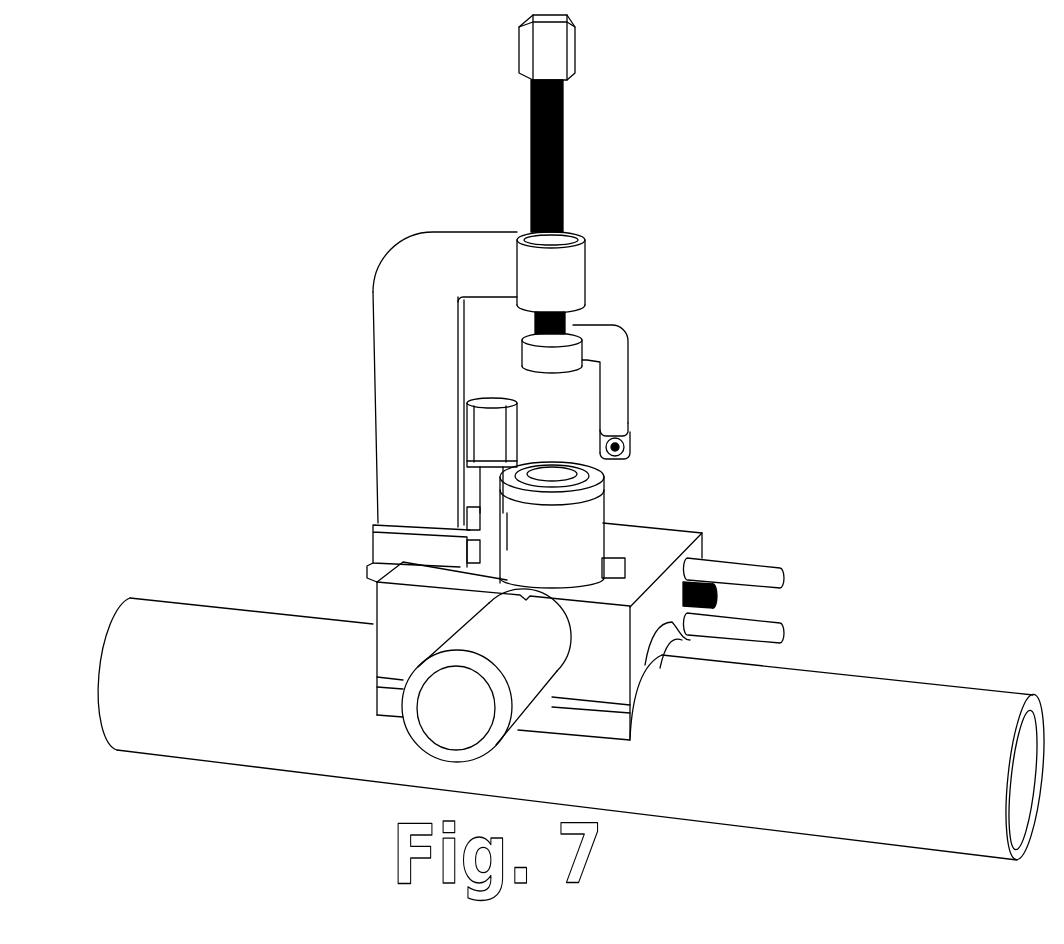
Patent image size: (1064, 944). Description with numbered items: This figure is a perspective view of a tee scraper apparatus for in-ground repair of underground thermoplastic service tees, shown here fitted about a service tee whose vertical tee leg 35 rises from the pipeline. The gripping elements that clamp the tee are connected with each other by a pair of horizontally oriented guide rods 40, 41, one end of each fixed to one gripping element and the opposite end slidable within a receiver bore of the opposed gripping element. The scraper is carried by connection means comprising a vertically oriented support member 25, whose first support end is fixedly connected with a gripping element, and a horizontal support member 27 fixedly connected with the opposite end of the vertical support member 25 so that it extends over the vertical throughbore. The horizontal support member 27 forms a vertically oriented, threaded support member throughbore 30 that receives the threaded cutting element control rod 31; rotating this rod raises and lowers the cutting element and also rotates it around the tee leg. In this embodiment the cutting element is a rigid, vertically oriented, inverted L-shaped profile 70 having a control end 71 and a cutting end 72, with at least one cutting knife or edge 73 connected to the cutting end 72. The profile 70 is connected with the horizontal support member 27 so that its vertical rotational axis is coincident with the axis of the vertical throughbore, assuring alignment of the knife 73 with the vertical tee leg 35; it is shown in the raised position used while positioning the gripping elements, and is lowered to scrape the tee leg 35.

The vertically oriented support member 25 is at (372, 368).
The horizontal support member 27 is at (455, 232).
The support member throughbore 30 is at (570, 232).
The cutting element control rod 31 is at (563, 160).
The vertical tee leg 35 is at (607, 496).
The guide rod 40 is at (758, 558).
The guide rod 41 is at (763, 615).
The inverted L-shaped profile 70 is at (628, 366).
The control end 71 is at (592, 320).
The cutting end 72 is at (628, 420).
The cutting knife or edge 73 is at (620, 478).